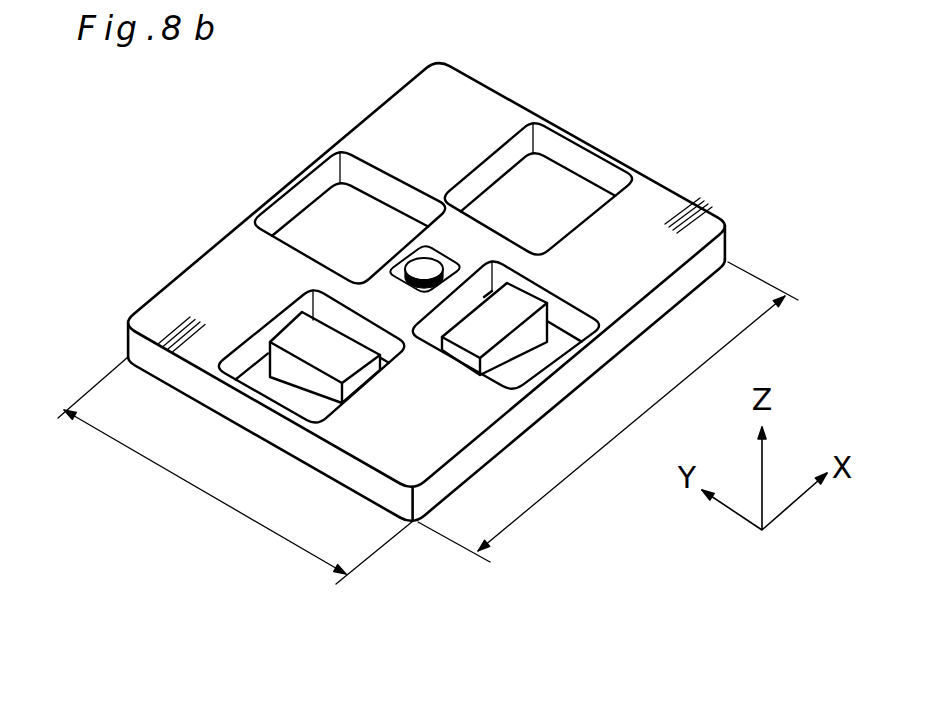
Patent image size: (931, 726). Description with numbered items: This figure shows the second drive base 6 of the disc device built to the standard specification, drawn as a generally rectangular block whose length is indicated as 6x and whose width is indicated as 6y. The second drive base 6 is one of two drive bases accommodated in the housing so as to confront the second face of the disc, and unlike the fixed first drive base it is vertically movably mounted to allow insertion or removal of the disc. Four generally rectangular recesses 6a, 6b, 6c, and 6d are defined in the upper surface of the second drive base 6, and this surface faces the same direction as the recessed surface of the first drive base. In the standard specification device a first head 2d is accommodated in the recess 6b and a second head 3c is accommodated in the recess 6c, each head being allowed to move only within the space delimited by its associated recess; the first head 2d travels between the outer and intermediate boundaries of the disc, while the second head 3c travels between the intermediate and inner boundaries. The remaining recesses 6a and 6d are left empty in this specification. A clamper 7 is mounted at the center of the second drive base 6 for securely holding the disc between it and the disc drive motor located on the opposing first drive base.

The second drive base 6 is at (640, 255).
The recess 6a is at (557, 147).
The recess 6b is at (318, 405).
The recess 6c is at (533, 365).
The recess 6d is at (307, 195).
The first head 2d is at (313, 345).
The second head 3c is at (510, 355).
The clamper 7 is at (432, 263).
The length of the second drive base 6x is at (608, 412).
The width of the second drive base 6y is at (235, 470).